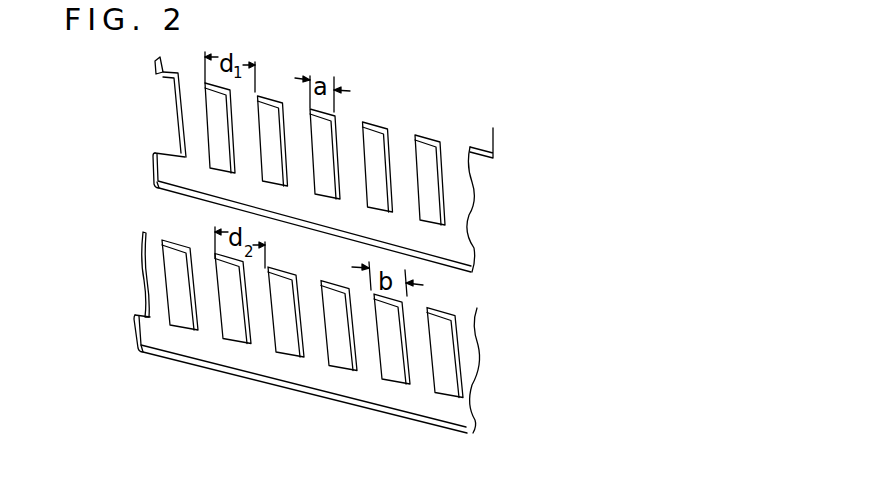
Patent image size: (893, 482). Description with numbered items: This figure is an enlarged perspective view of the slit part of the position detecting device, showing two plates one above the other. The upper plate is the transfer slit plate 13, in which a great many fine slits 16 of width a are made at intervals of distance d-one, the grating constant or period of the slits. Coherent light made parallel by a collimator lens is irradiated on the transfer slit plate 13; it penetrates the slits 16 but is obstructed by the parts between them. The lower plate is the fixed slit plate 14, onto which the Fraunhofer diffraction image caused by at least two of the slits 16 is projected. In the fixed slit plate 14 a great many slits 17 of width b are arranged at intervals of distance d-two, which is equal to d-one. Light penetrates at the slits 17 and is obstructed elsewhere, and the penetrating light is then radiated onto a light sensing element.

The transfer slit plate 13 is at (150, 158).
The fixed slit plate 14 is at (135, 320).
The slits 16 is at (336, 118).
The slits 17 is at (300, 318).